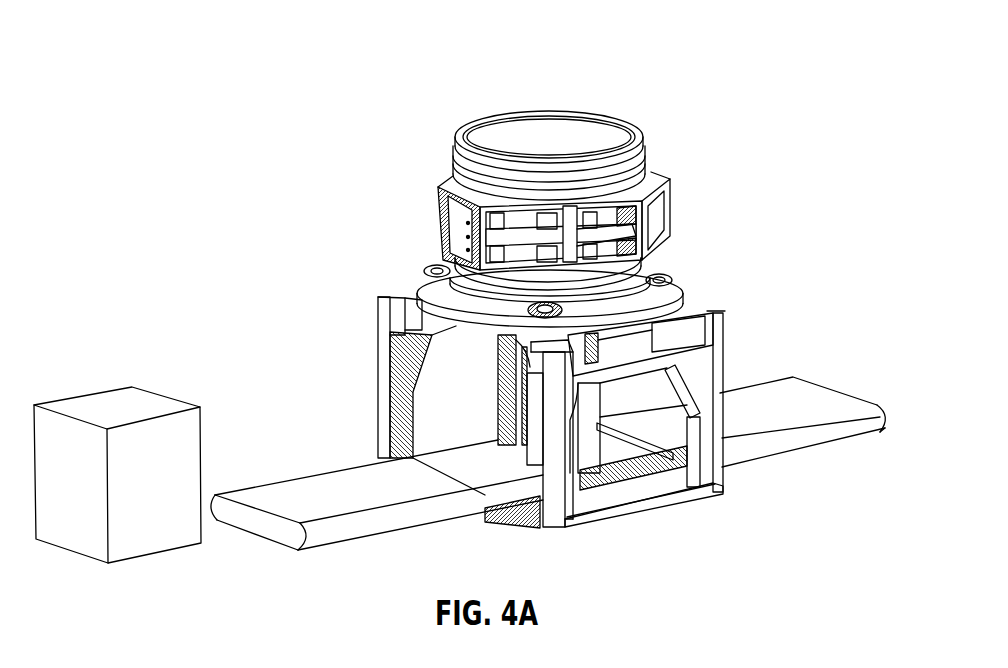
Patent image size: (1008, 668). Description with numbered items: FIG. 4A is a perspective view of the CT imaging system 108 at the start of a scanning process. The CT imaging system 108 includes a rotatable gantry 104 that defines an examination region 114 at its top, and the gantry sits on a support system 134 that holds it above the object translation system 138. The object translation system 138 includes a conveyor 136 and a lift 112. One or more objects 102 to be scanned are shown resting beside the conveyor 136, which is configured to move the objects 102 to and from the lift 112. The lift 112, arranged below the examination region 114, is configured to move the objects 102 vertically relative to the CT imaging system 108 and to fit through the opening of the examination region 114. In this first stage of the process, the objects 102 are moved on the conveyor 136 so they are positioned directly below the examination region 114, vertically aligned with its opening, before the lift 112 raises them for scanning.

The objects 102 is at (122, 395).
The rotatable gantry 104 is at (575, 132).
The CT imaging system 108 is at (575, 163).
The lift 112 is at (468, 409).
The examination region 114 is at (501, 119).
The support system 134 is at (494, 395).
The conveyor 136 is at (352, 537).
The object translation system 138 is at (798, 350).